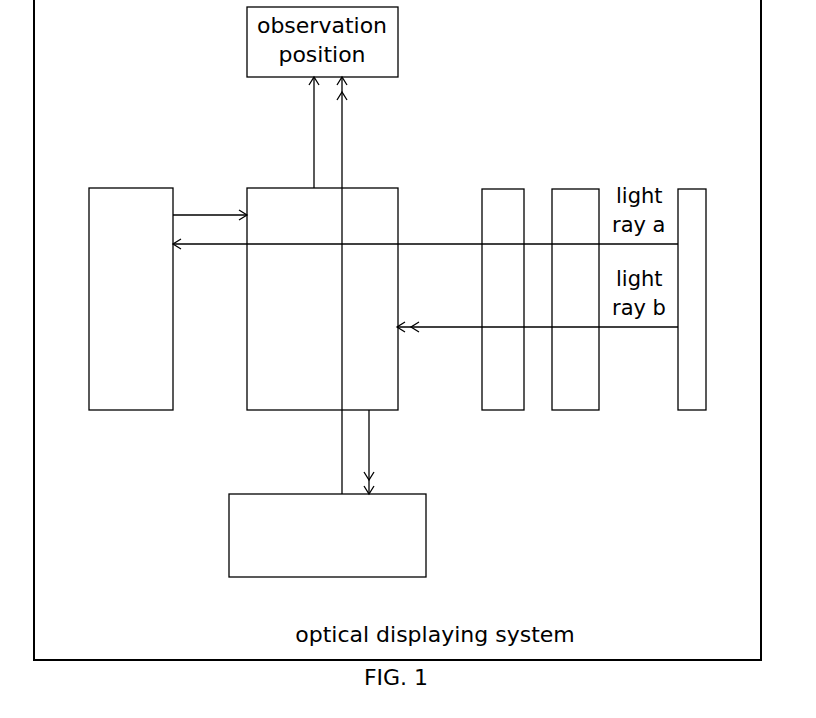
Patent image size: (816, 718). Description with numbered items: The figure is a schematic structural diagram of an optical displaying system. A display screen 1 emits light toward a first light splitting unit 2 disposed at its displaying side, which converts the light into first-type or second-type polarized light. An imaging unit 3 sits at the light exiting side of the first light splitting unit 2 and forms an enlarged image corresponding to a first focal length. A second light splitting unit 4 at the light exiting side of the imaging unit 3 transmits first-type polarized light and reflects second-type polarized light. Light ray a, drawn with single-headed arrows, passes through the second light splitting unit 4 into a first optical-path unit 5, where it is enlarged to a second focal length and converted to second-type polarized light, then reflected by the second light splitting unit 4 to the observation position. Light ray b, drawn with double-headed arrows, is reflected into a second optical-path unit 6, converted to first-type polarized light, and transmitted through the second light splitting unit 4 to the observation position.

The display screen 1 is at (693, 227).
The first light splitting unit 2 is at (573, 203).
The imaging unit 3 is at (503, 209).
The second light splitting unit 4 is at (377, 203).
The first optical-path unit 5 is at (131, 202).
The second optical-path unit 6 is at (404, 552).